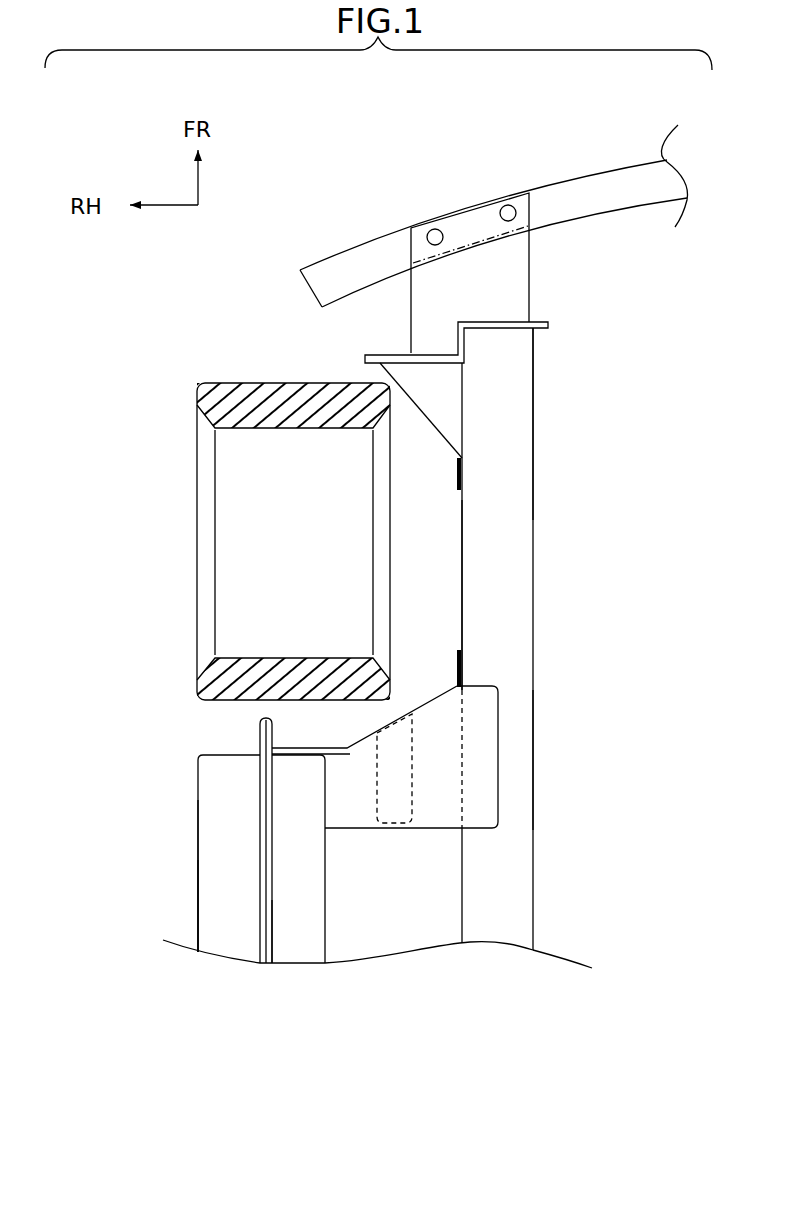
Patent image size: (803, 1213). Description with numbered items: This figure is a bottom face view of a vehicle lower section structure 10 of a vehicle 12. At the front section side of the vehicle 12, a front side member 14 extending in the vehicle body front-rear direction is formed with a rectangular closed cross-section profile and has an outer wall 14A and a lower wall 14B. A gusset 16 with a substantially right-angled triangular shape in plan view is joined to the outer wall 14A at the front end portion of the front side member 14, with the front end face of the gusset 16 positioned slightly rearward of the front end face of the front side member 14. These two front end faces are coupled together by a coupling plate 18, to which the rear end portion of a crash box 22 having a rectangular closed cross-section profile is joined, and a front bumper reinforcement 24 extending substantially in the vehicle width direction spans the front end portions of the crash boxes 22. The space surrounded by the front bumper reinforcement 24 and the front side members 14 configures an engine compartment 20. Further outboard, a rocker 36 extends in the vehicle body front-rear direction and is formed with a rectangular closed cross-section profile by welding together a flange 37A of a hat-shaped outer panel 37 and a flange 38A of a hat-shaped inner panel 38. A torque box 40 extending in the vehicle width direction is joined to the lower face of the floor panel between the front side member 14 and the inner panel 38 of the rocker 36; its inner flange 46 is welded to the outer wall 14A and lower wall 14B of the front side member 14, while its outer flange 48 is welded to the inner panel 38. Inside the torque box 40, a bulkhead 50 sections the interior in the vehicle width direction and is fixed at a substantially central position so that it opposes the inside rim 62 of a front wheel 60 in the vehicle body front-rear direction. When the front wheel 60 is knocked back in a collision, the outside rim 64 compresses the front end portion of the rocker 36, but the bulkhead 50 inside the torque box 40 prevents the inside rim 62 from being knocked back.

The vehicle lower section structure 10 is at (405, 858).
The vehicle 12 is at (175, 867).
The front side member 14 is at (533, 538).
The outer wall 14A is at (460, 565).
The lower wall 14B is at (517, 752).
The gusset 16 is at (432, 400).
The coupling plate 18 is at (545, 322).
The engine compartment 20 is at (590, 400).
The crash box 22 is at (512, 258).
The front bumper reinforcement 24 is at (597, 185).
The rocker 36 is at (198, 762).
The outer panel 37 is at (212, 907).
The flange 37A is at (255, 735).
The inner panel 38 is at (318, 907).
The flange 38A is at (270, 910).
The torque box 40 is at (435, 832).
The inner flange 46 is at (462, 638).
The outer flange 48 is at (296, 752).
The bulkhead 50 is at (413, 773).
The front wheel 60 is at (222, 380).
The inside rim 62 is at (390, 541).
The outside rim 64 is at (203, 517).